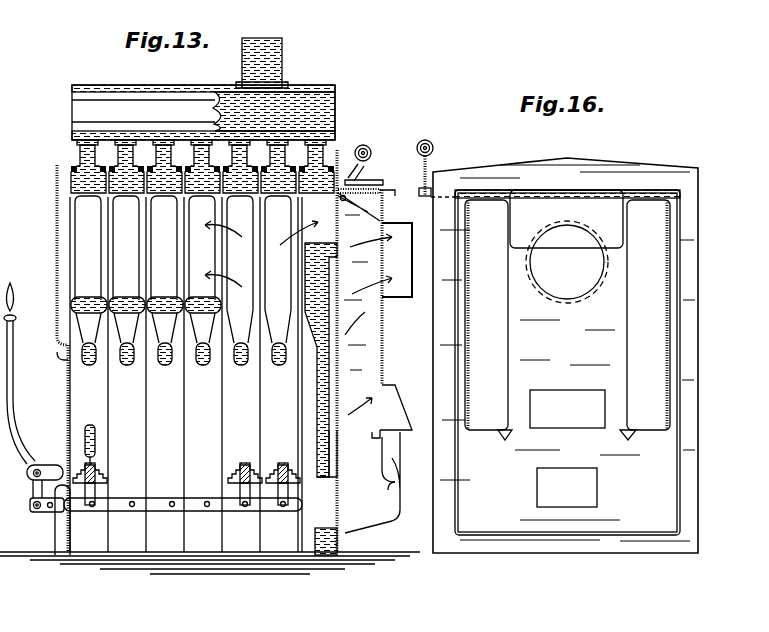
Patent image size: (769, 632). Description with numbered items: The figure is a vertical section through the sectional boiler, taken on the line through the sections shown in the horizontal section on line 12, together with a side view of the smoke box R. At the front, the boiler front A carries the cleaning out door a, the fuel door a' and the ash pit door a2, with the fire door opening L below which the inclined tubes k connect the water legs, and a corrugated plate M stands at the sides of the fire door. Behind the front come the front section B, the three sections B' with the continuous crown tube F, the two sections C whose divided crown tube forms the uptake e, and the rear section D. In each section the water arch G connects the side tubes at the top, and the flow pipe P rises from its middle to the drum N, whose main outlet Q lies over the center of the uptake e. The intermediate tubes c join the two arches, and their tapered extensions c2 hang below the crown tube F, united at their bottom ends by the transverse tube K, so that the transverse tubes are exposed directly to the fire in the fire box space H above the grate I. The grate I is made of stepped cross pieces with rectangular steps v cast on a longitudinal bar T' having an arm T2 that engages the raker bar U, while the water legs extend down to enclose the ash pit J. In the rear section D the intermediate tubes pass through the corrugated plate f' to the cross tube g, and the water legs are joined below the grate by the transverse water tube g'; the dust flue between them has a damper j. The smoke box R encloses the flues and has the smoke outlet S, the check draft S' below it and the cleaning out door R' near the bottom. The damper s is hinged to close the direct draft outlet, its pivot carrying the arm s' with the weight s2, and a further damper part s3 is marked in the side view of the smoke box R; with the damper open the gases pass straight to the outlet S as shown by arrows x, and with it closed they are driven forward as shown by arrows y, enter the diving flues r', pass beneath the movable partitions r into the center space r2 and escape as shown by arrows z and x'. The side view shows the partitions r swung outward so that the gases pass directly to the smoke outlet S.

In FIG. 13, the drum N is at (203, 112).
In FIG. 13, the main outlet Q is at (283, 62).
In FIG. 13, the flow pipe P is at (83, 160).
In FIG. 13, the fire box space H is at (186, 374).
In FIG. 13, the intermediate tubes c is at (178, 247).
In FIG. 13, the water arch G is at (165, 193).
In FIG. 13, the continuous crown tube F is at (166, 296).
In FIG. 13, the extensions of the intermediate tubes c2 is at (136, 318).
In FIG. 13, the transverse tube K is at (165, 366).
In FIG. 13, the uptake e is at (259, 332).
In FIG. 13, the arrows y is at (225, 250).
In FIG. 13, the arrows x is at (333, 254).
In FIG. 13, the flow arrow x' is at (361, 321).
In FIG. 13, the arrows z is at (360, 400).
In FIG. 13, the corrugated plate M is at (316, 380).
In FIG. 13, the corrugated plate f' is at (308, 405).
In FIG. 13, the transverse water tube g' is at (317, 539).
In FIG. 13, the cross tube g is at (333, 453).
In FIG. 13, the boiler front A is at (60, 179).
In FIG. 13, the cleaning out door a is at (43, 263).
In FIG. 13, the section line 12 is at (56, 213).
In FIG. 13, the fuel door a' is at (49, 448).
In FIG. 13, the ash pit door a2 is at (55, 536).
In FIG. 13, the fire door opening L is at (45, 397).
In FIG. 13, the arm T2 is at (100, 496).
In FIG. 13, the raker bar U is at (207, 501).
In FIG. 13, the longitudinal bar T' is at (284, 493).
In FIG. 13, the grate I is at (100, 468).
In FIG. 13, the rectangular steps v is at (272, 466).
In FIG. 13, the inclined tubes k is at (90, 424).
In FIG. 13, the front section B is at (85, 581).
In FIG. 13, the front series sections B' is at (156, 581).
In FIG. 13, the rear series sections C is at (281, 555).
In FIG. 13, the rear section D is at (311, 555).
In FIG. 13, the ash pit J is at (156, 533).
In FIG. 13, the outer spaces r' is at (196, 521).
In FIG. 16, the outer spaces r' is at (571, 316).
In FIG. 13, the damper s is at (360, 351).
In FIG. 16, the damper s is at (546, 260).
In FIG. 13, the weight s2 is at (363, 146).
In FIG. 16, the weight s2 is at (422, 138).
In FIG. 13, the smoke outlet S is at (378, 287).
In FIG. 16, the smoke outlet S is at (567, 262).
In FIG. 13, the check draft S' is at (397, 407).
In FIG. 16, the check draft S' is at (567, 409).
In FIG. 13, the damper j is at (325, 500).
In FIG. 13, the cleaning out door R' is at (407, 472).
In FIG. 16, the cleaning out door R' is at (567, 487).
In FIG. 16, the arm s' is at (438, 171).
In FIG. 16, the smoke box R is at (565, 360).
In FIG. 16, the movable partitions r is at (567, 320).
In FIG. 16, the center space r2 is at (577, 420).
In FIG. 16, the trough s3 is at (489, 200).